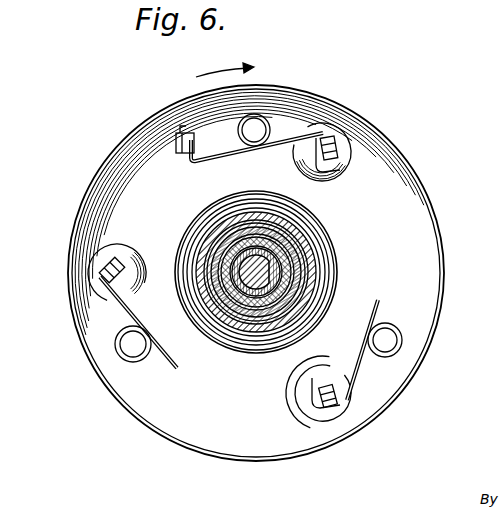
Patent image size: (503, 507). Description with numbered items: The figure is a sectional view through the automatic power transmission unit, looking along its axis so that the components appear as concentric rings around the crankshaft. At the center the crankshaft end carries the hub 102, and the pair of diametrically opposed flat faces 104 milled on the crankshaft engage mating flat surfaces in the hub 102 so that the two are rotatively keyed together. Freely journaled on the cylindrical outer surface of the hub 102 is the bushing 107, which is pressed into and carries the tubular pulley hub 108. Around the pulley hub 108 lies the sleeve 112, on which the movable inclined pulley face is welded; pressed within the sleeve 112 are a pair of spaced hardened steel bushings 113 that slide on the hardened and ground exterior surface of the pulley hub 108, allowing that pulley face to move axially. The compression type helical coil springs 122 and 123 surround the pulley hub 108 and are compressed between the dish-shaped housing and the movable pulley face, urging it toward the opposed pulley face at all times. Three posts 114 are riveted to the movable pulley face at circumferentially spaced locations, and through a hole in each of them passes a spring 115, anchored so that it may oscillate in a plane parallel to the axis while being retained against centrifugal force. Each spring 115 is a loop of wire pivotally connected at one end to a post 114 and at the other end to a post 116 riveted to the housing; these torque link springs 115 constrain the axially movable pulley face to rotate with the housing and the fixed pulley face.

The hub 102 is at (216, 242).
The flat faces 104 is at (269, 273).
The bushing 107 is at (316, 250).
The pulley hub 108 is at (298, 252).
The sleeve 112 is at (248, 320).
The hardened steel bushings 113 is at (281, 325).
The posts 114 is at (345, 147).
The springs 115 is at (270, 124).
The posts 116 is at (174, 132).
The compression type helical coil spring 122 is at (234, 212).
The compression type helical coil spring 123 is at (273, 201).